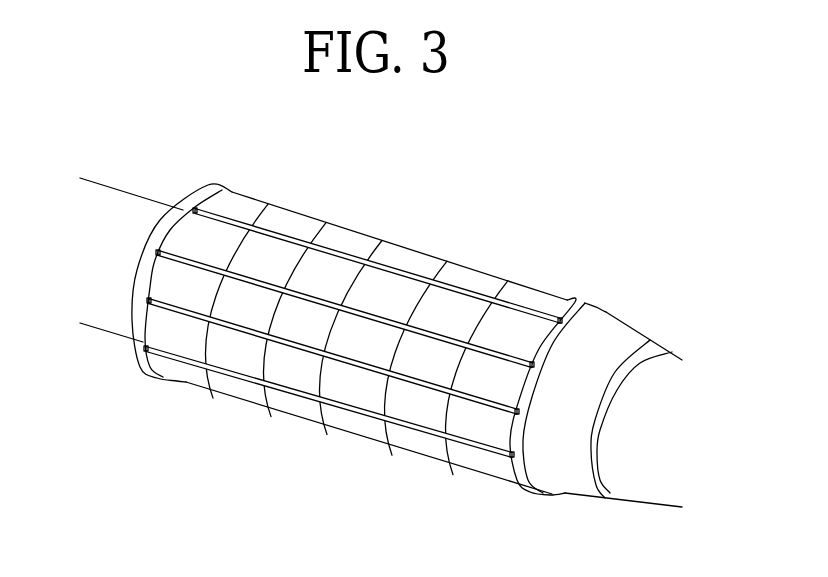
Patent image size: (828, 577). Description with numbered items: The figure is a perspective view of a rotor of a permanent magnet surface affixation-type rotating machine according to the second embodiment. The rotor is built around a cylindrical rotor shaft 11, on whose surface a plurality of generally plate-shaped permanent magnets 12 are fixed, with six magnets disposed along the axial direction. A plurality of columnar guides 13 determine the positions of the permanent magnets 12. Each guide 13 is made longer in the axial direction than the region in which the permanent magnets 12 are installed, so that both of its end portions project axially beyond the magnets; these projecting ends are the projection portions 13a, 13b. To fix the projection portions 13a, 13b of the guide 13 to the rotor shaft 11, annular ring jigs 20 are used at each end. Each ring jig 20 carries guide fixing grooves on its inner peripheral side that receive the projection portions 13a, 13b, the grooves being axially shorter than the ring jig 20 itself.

The rotor shaft 11 is at (617, 340).
The permanent magnets 12 is at (352, 390).
The guide 13 is at (307, 288).
The projection portion 13a is at (146, 297).
The projection portion 13b is at (506, 407).
The ring jig 20 is at (187, 200).